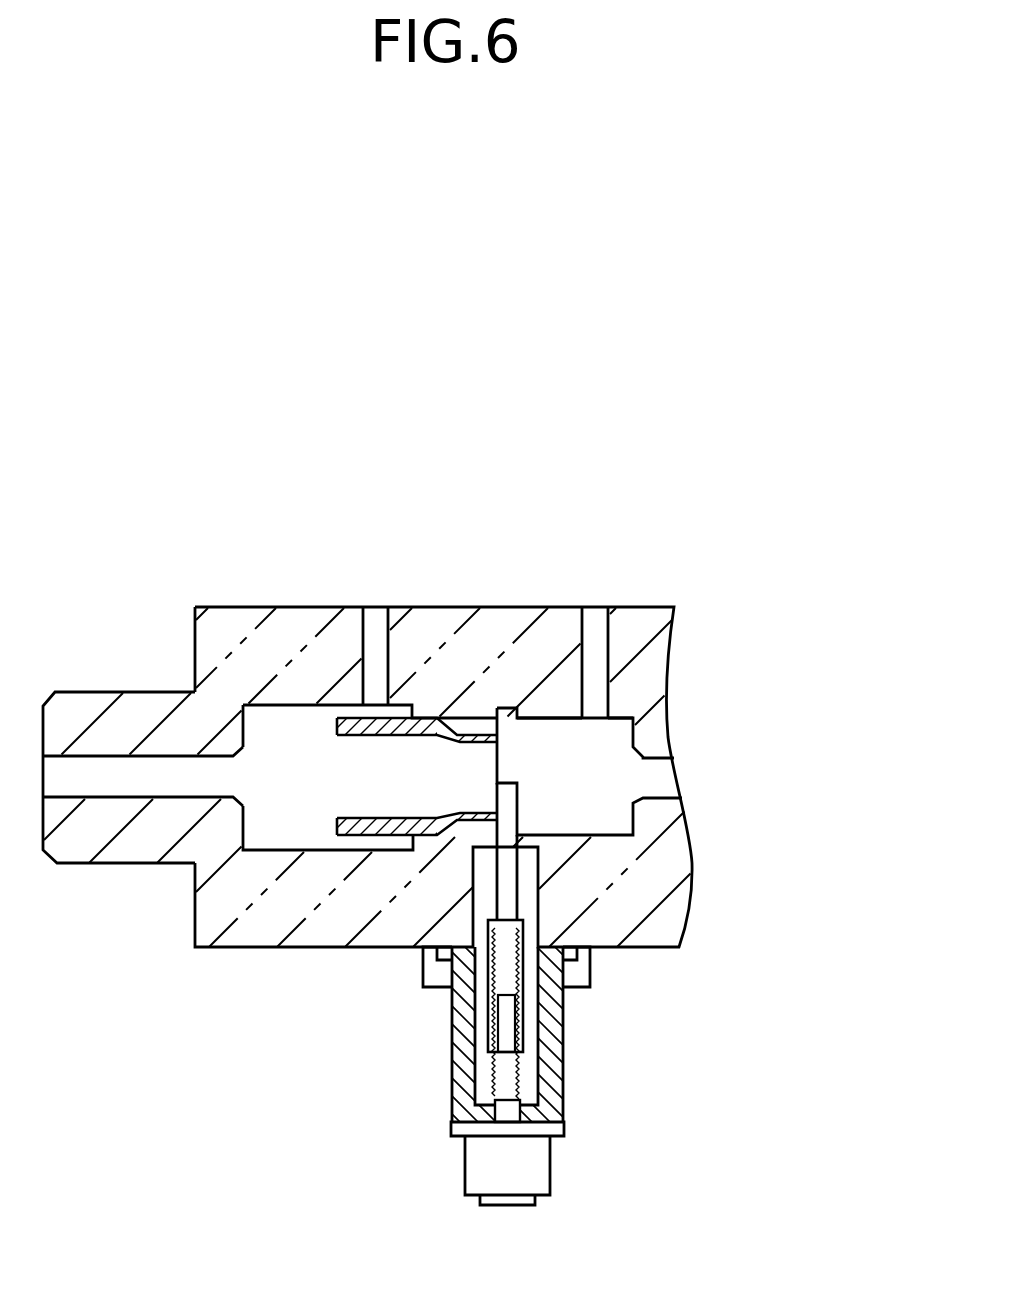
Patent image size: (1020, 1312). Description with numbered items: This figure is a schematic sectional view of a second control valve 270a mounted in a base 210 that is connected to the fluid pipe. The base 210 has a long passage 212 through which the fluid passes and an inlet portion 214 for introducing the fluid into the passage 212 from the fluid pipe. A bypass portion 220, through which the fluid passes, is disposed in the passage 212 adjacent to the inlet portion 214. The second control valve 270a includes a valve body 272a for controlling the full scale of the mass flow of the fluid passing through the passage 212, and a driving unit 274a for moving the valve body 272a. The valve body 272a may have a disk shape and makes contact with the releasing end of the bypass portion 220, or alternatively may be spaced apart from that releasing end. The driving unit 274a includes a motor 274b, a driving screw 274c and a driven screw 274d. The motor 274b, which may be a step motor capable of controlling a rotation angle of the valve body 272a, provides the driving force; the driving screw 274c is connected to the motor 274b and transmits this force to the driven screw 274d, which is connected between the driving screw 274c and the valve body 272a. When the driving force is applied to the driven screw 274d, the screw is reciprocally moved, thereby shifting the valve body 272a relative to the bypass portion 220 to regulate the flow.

The base 210 is at (242, 937).
The passage 212 is at (617, 742).
The inlet portion 214 is at (137, 855).
The bypass portion 220 is at (440, 722).
The second control valve 270a is at (489, 1067).
The valve body 272a is at (507, 808).
The driving unit 274a is at (455, 1082).
The motor 274b is at (538, 1172).
The driving screw 274c is at (508, 1082).
The driven screw 274d is at (512, 988).